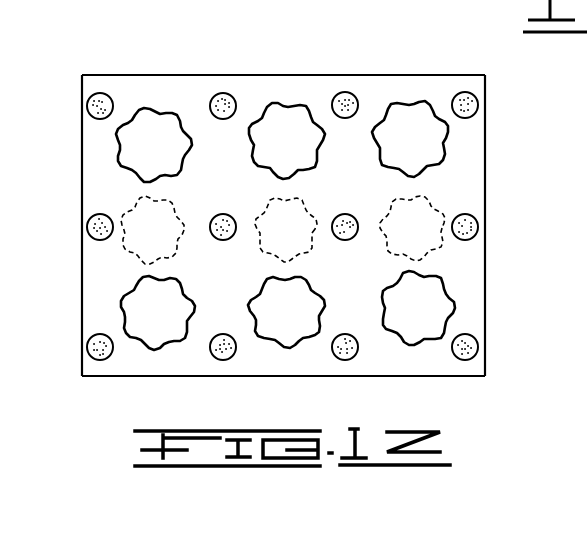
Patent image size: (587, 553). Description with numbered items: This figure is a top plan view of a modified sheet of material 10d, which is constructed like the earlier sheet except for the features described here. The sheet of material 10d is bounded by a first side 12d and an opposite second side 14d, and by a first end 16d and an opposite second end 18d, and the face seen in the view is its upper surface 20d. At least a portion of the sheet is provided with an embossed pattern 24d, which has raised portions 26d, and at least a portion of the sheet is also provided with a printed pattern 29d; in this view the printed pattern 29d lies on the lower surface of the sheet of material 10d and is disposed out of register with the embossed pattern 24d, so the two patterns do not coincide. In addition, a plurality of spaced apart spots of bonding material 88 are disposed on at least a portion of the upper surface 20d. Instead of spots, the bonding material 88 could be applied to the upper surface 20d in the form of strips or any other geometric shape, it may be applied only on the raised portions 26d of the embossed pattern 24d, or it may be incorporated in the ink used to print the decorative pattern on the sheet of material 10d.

The sheet of material 10d is at (358, 57).
The first side 12d is at (82, 181).
The second side 14d is at (485, 157).
The first end 16d is at (217, 76).
The second end 18d is at (196, 377).
The upper surface 20d is at (387, 353).
The embossed pattern 24d is at (438, 308).
The raised portions 26d is at (427, 288).
The printed pattern 29d is at (132, 255).
The spots of bonding material 88 is at (103, 94).